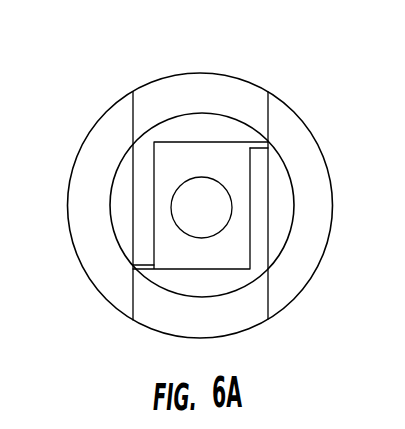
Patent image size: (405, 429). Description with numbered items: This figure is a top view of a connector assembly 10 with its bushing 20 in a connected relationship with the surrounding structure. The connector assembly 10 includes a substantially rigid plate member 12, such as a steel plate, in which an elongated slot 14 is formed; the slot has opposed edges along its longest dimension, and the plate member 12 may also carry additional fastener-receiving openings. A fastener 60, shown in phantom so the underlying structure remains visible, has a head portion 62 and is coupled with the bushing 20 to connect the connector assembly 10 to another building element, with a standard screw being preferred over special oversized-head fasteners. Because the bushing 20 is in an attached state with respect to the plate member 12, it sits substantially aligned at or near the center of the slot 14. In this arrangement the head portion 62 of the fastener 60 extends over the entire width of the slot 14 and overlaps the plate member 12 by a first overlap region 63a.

The connector assembly 10 is at (72, 110).
The plate member 12 is at (103, 276).
The elongated slot 14 is at (183, 93).
The bushing 20 is at (152, 191).
The fastener 60 is at (208, 103).
The head portion 62 is at (232, 117).
The first overlap region 63a is at (279, 205).